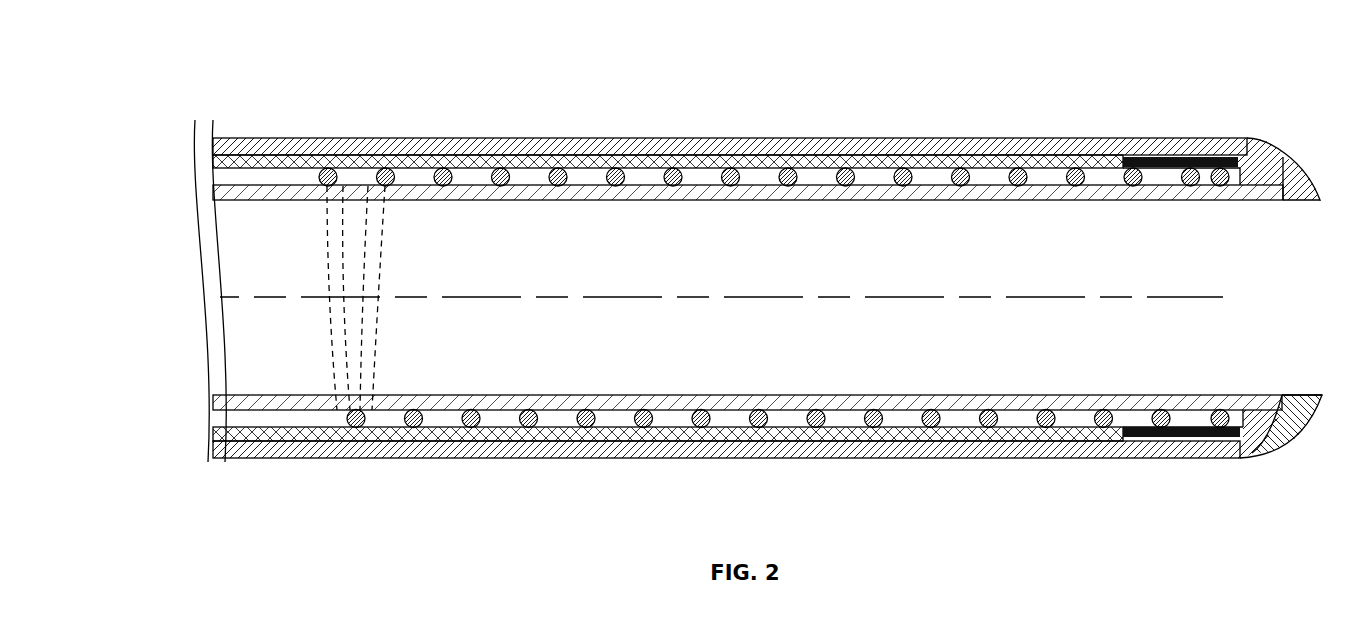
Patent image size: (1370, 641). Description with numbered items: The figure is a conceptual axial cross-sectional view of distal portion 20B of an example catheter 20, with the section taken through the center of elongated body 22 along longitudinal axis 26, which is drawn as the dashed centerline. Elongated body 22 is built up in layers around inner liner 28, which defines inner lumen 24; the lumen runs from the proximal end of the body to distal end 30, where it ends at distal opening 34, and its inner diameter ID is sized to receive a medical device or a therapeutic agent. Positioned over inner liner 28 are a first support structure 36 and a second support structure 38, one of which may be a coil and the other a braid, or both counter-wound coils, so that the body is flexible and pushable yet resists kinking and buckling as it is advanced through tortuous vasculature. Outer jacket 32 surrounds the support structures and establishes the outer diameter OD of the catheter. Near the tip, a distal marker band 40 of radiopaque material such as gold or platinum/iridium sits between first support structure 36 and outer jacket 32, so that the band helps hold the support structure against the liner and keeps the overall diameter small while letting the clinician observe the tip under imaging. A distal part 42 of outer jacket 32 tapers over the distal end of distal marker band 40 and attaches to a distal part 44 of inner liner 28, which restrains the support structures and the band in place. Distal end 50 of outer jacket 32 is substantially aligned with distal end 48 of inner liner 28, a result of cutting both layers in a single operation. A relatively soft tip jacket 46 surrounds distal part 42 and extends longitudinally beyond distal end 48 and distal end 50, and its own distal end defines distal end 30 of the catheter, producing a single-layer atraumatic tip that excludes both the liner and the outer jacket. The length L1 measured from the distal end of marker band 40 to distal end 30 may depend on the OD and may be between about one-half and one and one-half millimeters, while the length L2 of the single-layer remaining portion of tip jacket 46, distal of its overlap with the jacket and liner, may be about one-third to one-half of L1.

The catheter 20 is at (400, 97).
The distal portion 20B is at (170, 100).
The elongated body 22 is at (560, 128).
The inner lumen 24 is at (792, 324).
The longitudinal axis 26 is at (648, 297).
The inner liner 28 is at (646, 192).
The distal end 30 is at (1330, 202).
The outer jacket 32 is at (290, 150).
The distal opening 34 is at (1333, 291).
The first support structure 36 is at (352, 422).
The second support structure 38 is at (468, 422).
The distal marker band 40 is at (1175, 437).
The distal part of outer jacket 42 is at (1267, 427).
The distal part of inner liner 44 is at (1266, 200).
The tip jacket 46 is at (1282, 160).
The distal end of inner liner 48 is at (1285, 394).
The distal end of outer jacket 50 is at (1280, 411).
The inner diameter ID is at (1035, 201).
The outer diameter OD is at (982, 137).
The length L1 is at (1188, 24).
The length L2 is at (1228, 527).